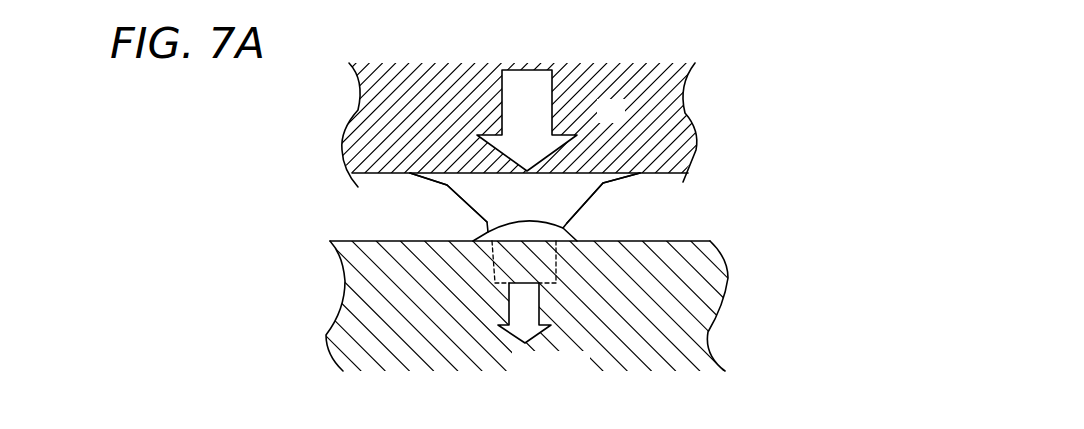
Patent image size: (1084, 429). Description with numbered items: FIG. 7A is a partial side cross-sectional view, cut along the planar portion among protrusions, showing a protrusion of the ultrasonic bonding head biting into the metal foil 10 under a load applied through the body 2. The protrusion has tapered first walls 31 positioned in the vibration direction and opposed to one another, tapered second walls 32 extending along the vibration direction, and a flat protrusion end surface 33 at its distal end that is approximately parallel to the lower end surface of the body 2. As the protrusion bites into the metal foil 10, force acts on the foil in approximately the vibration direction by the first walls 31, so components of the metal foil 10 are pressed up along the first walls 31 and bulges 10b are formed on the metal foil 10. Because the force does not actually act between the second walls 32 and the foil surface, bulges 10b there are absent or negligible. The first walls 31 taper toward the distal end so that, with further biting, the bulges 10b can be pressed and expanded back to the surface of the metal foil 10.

The body 2 is at (680, 123).
The metal foil 10 is at (343, 302).
The bulge 10b is at (562, 223).
The first wall 31 is at (585, 182).
The second wall 32 is at (463, 203).
The protrusion end surface 33 is at (548, 283).